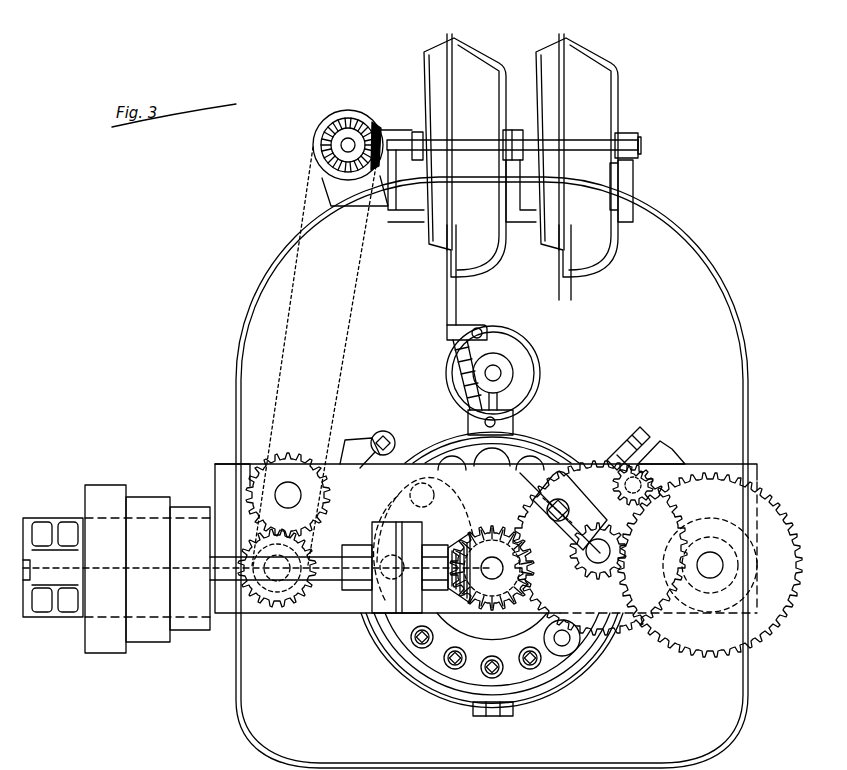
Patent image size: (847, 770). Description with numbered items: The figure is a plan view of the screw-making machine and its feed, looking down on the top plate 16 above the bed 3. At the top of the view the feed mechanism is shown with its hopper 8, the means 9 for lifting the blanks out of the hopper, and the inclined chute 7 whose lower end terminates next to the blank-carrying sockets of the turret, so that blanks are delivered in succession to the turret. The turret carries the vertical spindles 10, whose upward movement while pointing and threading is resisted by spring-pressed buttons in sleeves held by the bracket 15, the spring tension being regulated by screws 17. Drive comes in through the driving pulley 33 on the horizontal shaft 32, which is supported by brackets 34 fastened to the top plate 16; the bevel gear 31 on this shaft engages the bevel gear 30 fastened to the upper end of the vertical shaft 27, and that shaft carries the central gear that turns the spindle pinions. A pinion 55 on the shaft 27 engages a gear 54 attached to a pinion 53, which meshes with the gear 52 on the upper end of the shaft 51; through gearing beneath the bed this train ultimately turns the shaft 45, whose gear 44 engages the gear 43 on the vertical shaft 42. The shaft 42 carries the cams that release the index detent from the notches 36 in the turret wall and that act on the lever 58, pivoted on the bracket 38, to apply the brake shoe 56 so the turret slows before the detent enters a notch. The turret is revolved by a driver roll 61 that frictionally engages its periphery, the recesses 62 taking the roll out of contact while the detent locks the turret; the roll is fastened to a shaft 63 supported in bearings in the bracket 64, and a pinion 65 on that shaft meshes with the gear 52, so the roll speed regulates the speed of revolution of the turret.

The bed 3 is at (235, 693).
The inclined chute 7 is at (446, 305).
The hopper 8 is at (521, 155).
The means for lifting the blanks 9 is at (437, 236).
The spindles 10 is at (510, 436).
The bracket 15 is at (402, 632).
The top plate 16 is at (334, 614).
The screws 17 is at (392, 652).
The vertical shaft 27 is at (488, 530).
The bevel gear 30 is at (492, 569).
The bevel gear 31 is at (490, 581).
The horizontal shaft 32 is at (330, 552).
The driving pulley 33 is at (147, 569).
The brackets 34 is at (383, 522).
The notches 36 is at (397, 672).
The bracket 38 is at (342, 460).
The vertical shaft 42 is at (250, 466).
The gear 43 is at (262, 488).
The gear 44 is at (277, 610).
The shaft 45 is at (268, 556).
The shaft 51 is at (712, 578).
The gear 52 is at (710, 565).
The pinion 53 is at (598, 560).
The gear 54 is at (612, 612).
The pinion 55 is at (563, 528).
The brake shoe 56 is at (410, 455).
The lever 58 is at (386, 432).
The driver roll 61 is at (628, 446).
The recesses 62 is at (572, 686).
The shaft 63 is at (600, 548).
The bracket 64 is at (670, 458).
The pinion 65 is at (614, 489).